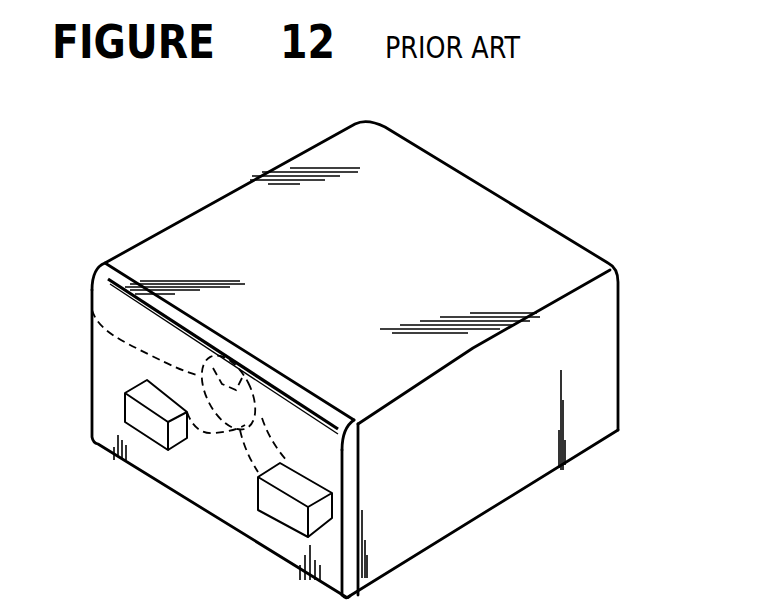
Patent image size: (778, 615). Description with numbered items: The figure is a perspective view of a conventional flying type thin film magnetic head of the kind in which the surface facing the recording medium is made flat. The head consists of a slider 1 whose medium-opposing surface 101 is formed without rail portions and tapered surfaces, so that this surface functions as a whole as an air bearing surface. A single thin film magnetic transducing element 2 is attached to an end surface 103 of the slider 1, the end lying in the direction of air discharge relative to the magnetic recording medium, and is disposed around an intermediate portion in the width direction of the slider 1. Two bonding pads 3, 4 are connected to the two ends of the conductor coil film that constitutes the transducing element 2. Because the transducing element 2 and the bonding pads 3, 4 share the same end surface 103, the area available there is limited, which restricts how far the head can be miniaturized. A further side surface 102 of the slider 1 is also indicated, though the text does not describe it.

The slider 1 is at (619, 352).
The thin film magnetic transducing element 2 is at (92, 311).
The bonding pad 3 is at (158, 428).
The bonding pad 4 is at (283, 510).
The medium-opposing surface 101 is at (501, 244).
The bottom edge / side surface 102 is at (533, 484).
The end surface 103 is at (211, 465).